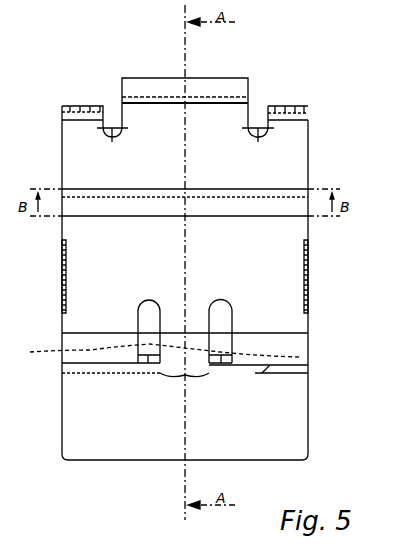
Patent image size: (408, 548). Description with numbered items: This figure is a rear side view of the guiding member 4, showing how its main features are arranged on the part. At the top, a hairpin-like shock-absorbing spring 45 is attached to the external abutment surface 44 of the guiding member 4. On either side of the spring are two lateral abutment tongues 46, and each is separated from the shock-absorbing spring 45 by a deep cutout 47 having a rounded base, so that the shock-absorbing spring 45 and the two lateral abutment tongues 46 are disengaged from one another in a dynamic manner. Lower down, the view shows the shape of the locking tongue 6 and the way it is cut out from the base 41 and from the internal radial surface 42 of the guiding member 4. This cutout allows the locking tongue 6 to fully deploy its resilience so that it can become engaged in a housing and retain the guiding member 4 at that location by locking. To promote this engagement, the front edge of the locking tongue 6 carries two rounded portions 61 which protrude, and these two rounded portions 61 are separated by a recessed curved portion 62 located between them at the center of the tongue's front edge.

The guiding member 4 is at (328, 75).
The locking tongue 6 is at (159, 352).
The base 41 is at (218, 266).
The internal radial surface 42 is at (282, 364).
The external abutment surface 44 is at (218, 163).
The shock-absorbing spring 45 is at (203, 91).
The lateral abutment tongues 46 is at (80, 122).
The cutout 47 is at (112, 128).
The rounded portions 61 is at (160, 378).
The recessed curved portion 62 is at (180, 385).